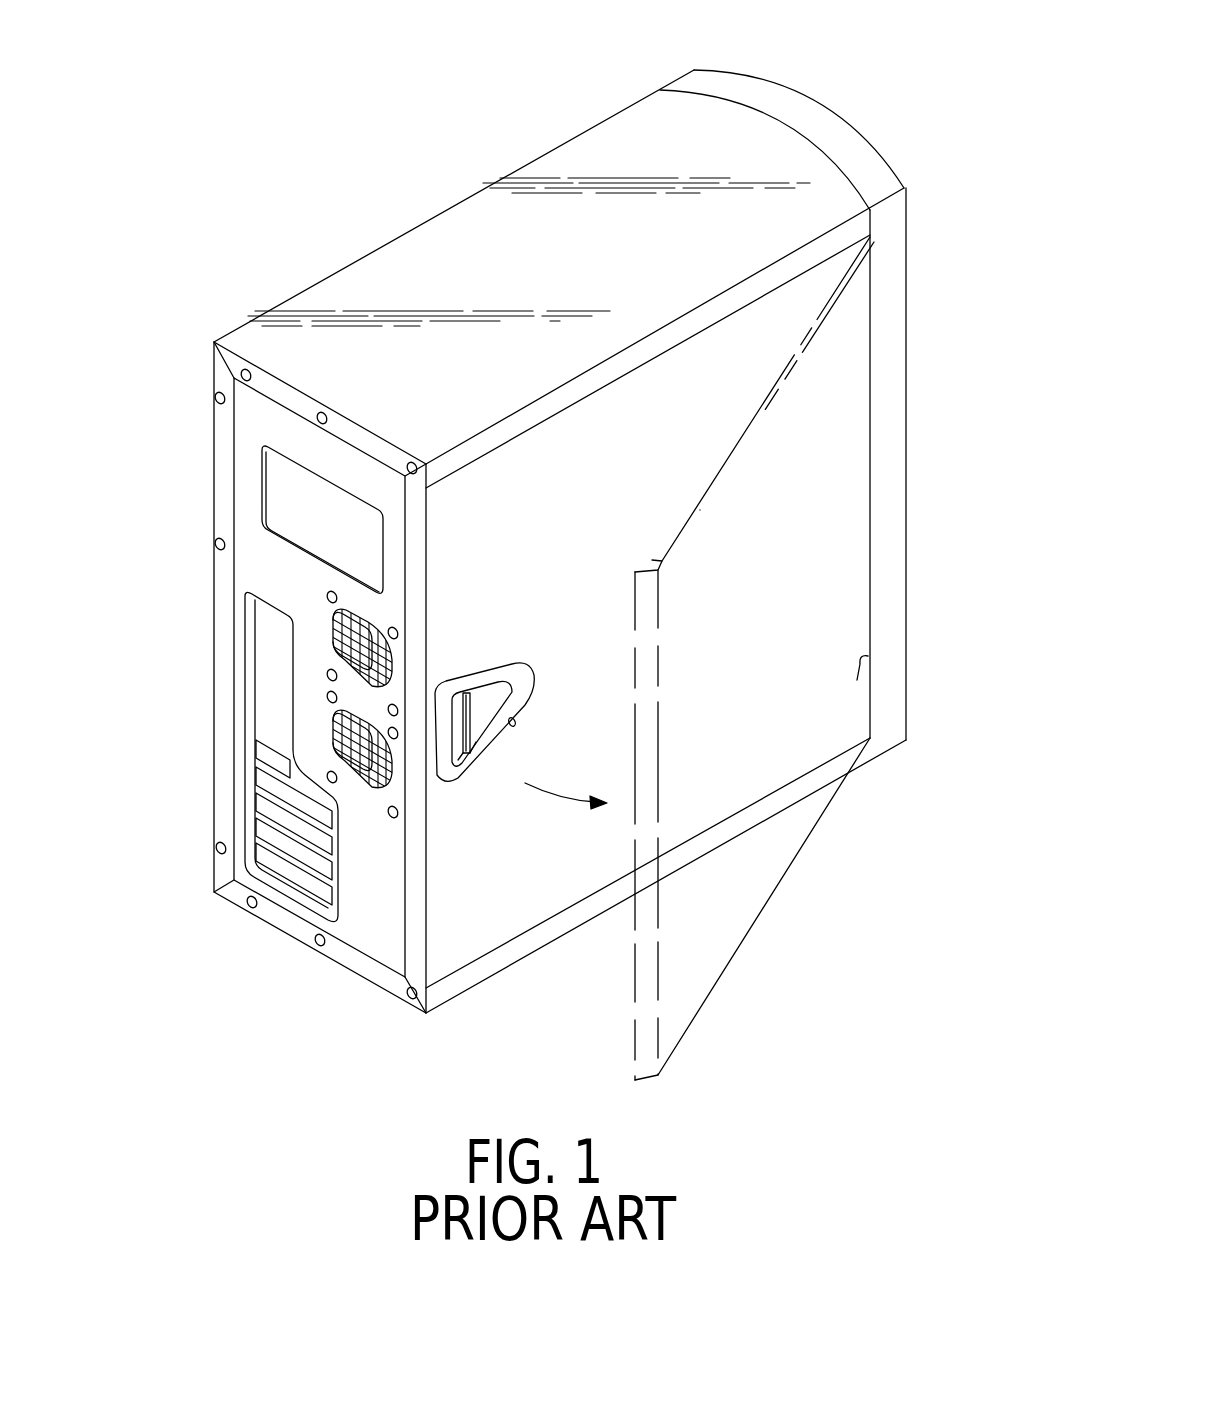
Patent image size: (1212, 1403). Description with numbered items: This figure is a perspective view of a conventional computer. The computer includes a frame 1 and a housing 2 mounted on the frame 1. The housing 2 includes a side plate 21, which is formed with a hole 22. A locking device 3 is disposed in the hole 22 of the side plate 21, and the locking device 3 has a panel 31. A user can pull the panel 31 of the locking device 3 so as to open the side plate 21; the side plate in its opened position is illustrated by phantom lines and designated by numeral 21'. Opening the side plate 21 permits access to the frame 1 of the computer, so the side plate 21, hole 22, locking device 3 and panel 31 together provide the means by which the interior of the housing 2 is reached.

The frame 1 is at (237, 465).
The housing 2 is at (441, 213).
The side plate 21 is at (752, 545).
The side plate in opened position 21' is at (853, 376).
The hole 22 is at (500, 663).
The locking device 3 is at (490, 754).
The panel 31 is at (472, 752).